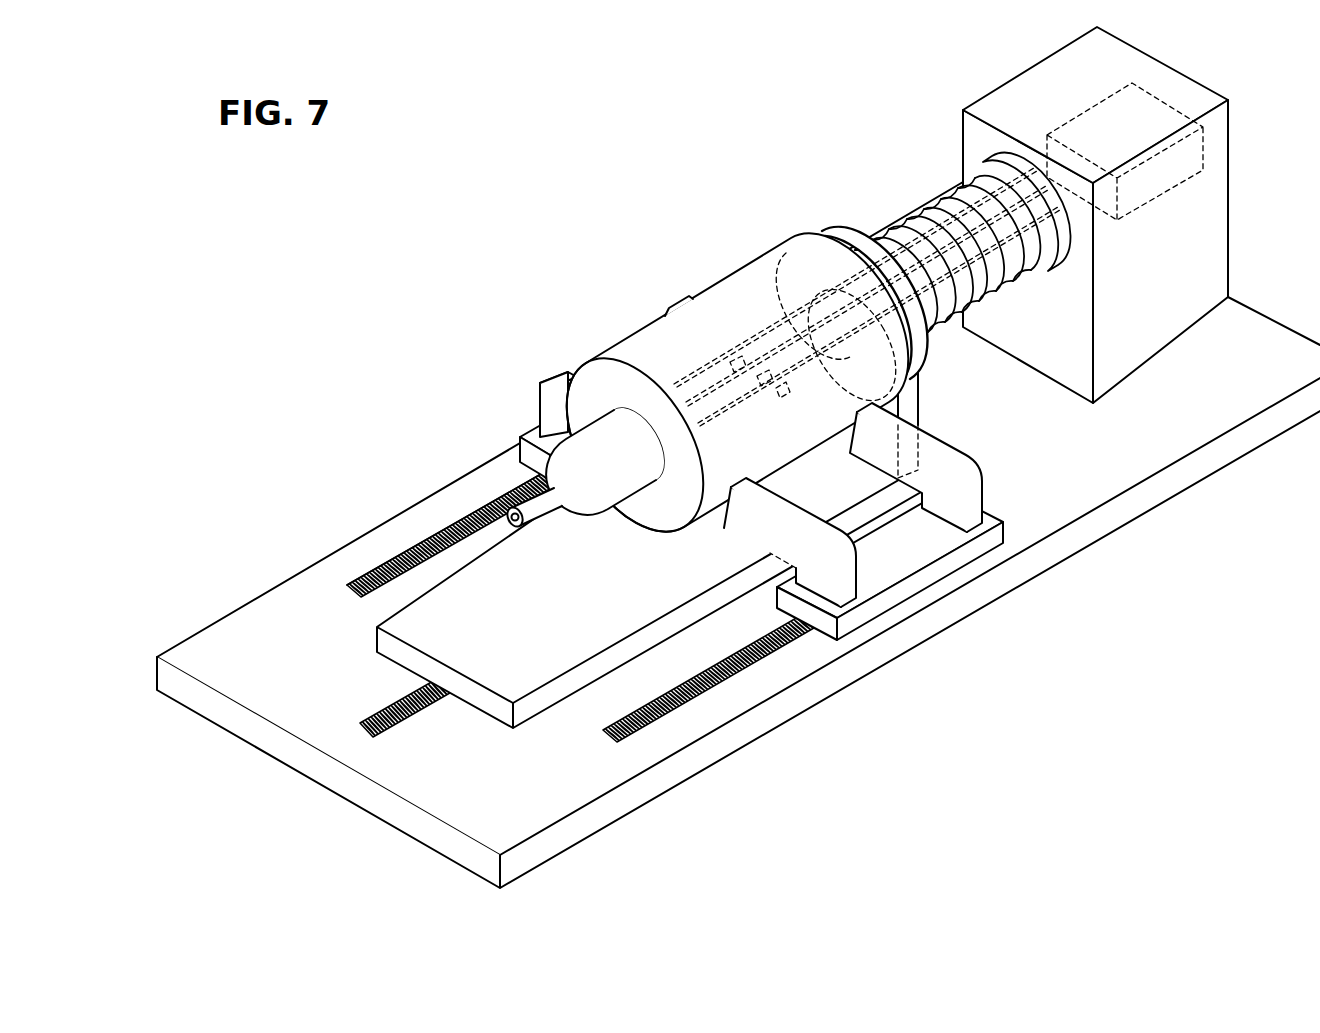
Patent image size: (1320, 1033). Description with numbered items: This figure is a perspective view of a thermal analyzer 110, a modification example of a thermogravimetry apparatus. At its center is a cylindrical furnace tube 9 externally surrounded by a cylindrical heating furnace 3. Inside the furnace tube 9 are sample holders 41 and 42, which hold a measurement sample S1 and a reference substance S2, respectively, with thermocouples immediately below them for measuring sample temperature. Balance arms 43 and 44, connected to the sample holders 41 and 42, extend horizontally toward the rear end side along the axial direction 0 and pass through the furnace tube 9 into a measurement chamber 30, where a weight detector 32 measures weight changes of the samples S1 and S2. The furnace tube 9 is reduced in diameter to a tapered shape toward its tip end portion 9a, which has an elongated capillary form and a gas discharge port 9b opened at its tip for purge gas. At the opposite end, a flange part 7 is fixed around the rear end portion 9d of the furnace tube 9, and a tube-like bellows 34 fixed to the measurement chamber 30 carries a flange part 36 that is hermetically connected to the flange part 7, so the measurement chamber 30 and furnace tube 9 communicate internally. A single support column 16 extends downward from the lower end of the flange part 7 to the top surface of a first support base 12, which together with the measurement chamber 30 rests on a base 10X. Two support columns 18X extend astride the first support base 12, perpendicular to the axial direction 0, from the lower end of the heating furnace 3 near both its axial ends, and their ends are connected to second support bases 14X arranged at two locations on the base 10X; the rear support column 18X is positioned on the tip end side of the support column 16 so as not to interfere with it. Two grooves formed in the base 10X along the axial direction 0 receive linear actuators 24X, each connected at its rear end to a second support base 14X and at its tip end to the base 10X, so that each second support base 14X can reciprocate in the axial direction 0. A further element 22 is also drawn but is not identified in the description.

The heating furnace 3 is at (608, 347).
The flange part 7 is at (860, 248).
The furnace tube 9 is at (600, 420).
The tip end portion 9a is at (512, 490).
The gas discharge port 9b is at (500, 516).
The rear end portion 9d is at (812, 265).
The base 10X is at (1152, 490).
The first support base 12 is at (532, 707).
The second support bases 14X is at (537, 438).
The support column 16 is at (913, 410).
The support columns 18X is at (846, 568).
The rail 22 is at (383, 715).
The linear actuators 24X is at (365, 575).
The measurement chamber 30 is at (1215, 237).
The weight detector 32 is at (1208, 142).
The bellows 34 is at (997, 280).
The flange part 36 is at (874, 243).
The sample holder 41 is at (667, 312).
The sample holder 42 is at (778, 396).
The balance arm 43 is at (778, 280).
The balance arm 44 is at (900, 370).
The sample S1 is at (737, 360).
The sample S2 is at (763, 372).
The thermal analyzer 110 is at (1128, 630).
The axial direction 0 is at (928, 688).